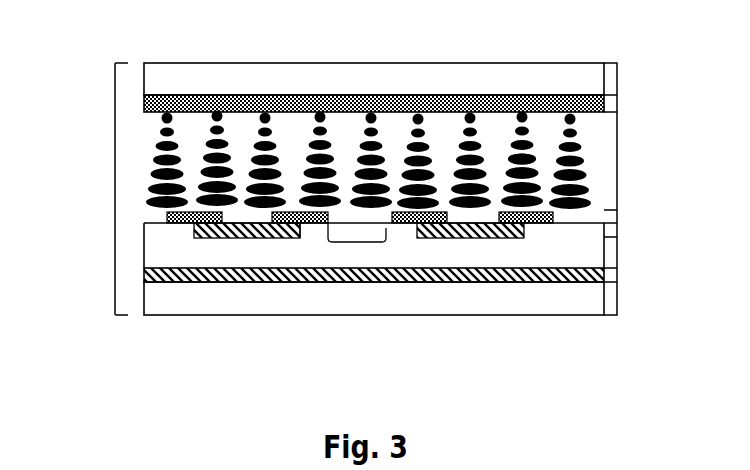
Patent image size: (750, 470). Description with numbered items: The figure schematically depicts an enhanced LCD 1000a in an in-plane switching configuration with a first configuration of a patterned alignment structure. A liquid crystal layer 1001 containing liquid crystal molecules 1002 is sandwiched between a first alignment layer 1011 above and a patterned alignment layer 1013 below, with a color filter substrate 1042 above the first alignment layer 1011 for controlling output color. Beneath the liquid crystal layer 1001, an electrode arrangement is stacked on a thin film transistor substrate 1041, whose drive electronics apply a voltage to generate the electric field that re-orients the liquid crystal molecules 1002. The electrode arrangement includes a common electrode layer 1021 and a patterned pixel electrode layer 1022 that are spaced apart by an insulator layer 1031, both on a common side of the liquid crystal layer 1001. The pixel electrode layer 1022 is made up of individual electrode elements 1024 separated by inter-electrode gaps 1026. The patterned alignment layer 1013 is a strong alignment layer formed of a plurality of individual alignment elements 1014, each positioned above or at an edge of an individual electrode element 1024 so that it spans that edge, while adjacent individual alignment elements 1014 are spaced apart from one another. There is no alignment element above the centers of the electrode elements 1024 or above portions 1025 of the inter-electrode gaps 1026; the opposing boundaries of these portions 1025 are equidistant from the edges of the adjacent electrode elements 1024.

The enhanced LCD 1000a is at (115, 193).
The liquid crystal molecules 1002 is at (527, 142).
The color filter substrate 1042 is at (617, 79).
The first alignment layer 1011 is at (617, 103).
The liquid crystal layer 1001 is at (617, 160).
The patterned alignment layer 1013 is at (617, 216).
The pixel electrode layer 1022 is at (617, 230).
The insulator layer 1031 is at (617, 250).
The common electrode layer 1021 is at (617, 274).
The thin film transistor substrate 1041 is at (617, 297).
The individual electrode elements 1024 is at (247, 237).
The inter-electrode gaps 1026 is at (321, 237).
The portions of the inter-electrode gaps 1025 is at (357, 242).
The individual alignment elements 1014 is at (543, 223).